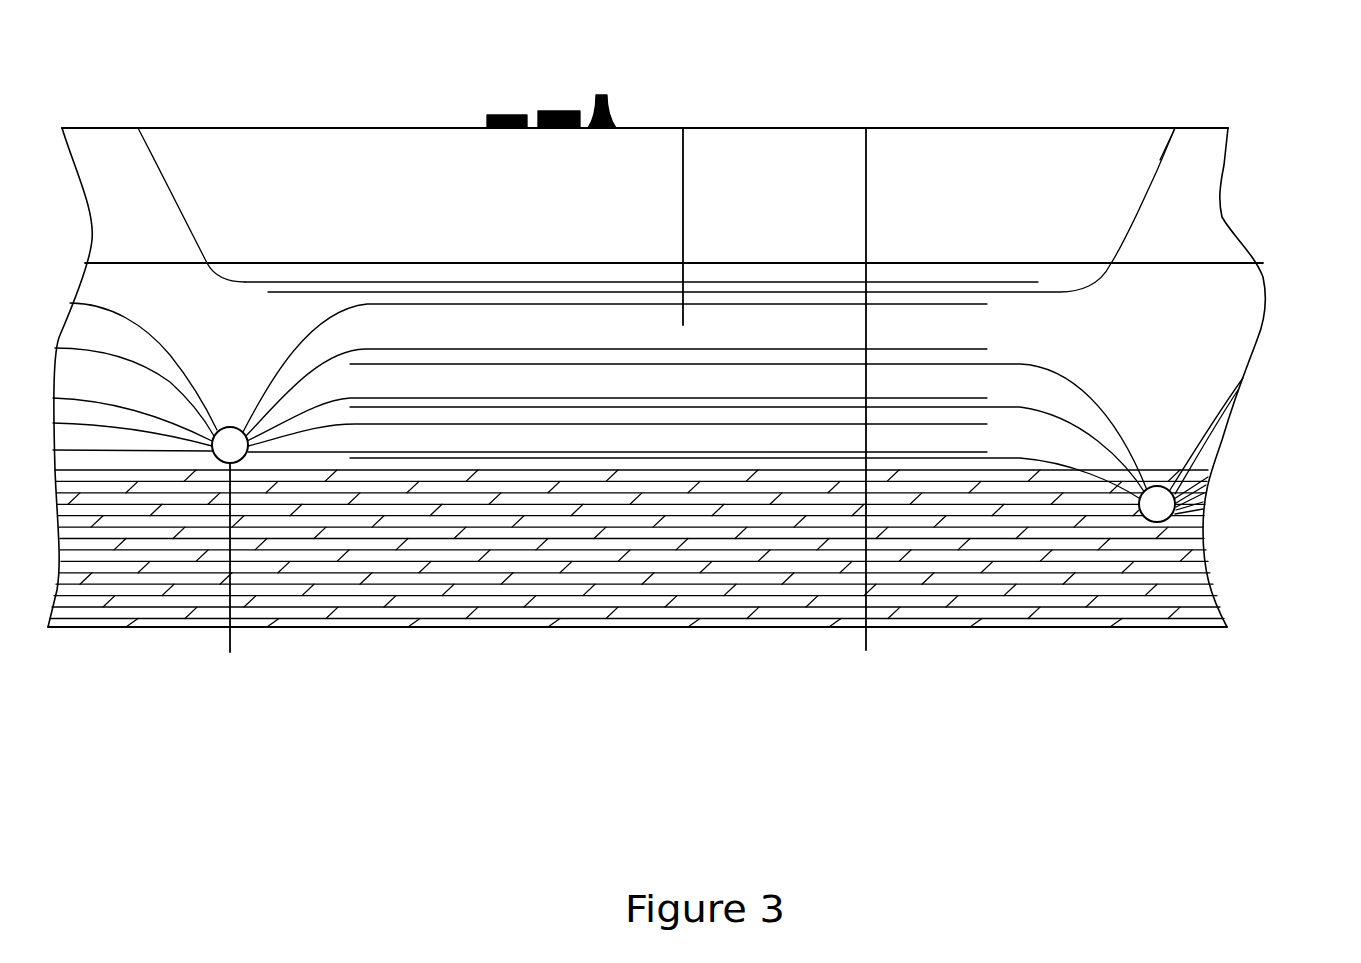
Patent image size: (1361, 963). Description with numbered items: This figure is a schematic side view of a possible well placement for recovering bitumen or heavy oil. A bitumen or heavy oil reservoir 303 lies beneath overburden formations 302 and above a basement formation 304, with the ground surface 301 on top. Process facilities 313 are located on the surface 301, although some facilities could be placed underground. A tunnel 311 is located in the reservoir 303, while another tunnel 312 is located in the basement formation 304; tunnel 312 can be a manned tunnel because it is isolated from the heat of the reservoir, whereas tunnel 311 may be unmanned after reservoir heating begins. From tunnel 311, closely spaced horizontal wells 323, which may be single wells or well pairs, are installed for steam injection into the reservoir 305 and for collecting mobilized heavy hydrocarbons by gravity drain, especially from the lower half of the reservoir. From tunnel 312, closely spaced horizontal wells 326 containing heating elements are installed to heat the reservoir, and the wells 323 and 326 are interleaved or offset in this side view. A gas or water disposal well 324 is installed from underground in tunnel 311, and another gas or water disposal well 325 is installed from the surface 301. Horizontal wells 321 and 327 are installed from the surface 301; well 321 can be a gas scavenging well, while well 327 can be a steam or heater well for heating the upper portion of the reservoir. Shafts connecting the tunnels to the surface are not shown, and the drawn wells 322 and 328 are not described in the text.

The surface 301 is at (985, 127).
The overburden formations 302 is at (1221, 204).
The bitumen or heavy oil reservoir 303 is at (1266, 322).
The basement formation 304 is at (1214, 604).
The reservoir 305 is at (1076, 352).
The tunnel 311 is at (228, 424).
The tunnel 312 is at (1145, 522).
The process facilities 313 is at (567, 95).
The horizontal well 321 is at (142, 126).
The vertical well 322 is at (866, 126).
The horizontal wells 323 is at (182, 362).
The gas or water disposal well 324 is at (228, 652).
The gas or water disposal well 325 is at (866, 648).
The horizontal wells 326 is at (1107, 418).
The horizontal well 327 is at (1176, 126).
The injection well 328 is at (683, 124).